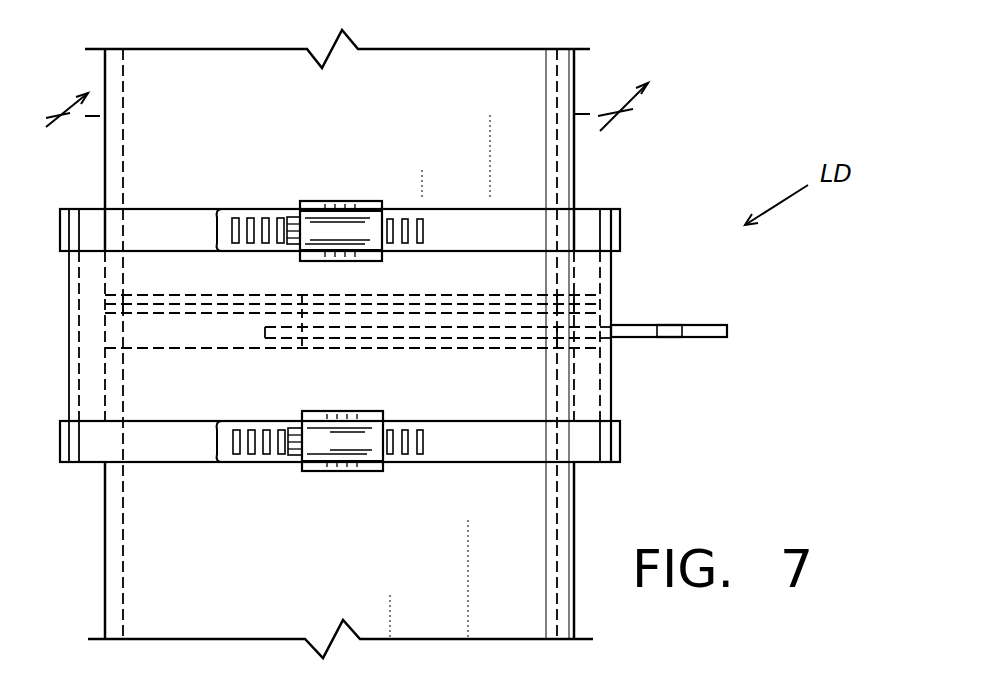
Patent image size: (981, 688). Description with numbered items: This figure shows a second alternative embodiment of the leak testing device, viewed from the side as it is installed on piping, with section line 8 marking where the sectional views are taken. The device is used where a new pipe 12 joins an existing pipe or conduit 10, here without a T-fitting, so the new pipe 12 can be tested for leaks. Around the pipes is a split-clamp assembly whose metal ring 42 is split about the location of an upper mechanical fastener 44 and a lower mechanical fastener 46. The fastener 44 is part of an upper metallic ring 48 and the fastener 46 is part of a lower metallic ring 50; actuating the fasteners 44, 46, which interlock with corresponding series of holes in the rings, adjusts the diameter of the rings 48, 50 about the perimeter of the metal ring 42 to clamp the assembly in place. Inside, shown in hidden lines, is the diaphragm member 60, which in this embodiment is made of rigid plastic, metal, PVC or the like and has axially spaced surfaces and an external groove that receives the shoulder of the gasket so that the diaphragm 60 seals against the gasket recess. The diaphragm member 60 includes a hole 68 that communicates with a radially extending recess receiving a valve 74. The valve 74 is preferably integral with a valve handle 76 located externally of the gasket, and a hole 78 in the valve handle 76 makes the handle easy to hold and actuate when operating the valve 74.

The section line 8- 8 is at (357, 106).
The existing pipe 10 is at (575, 530).
The new pipe 12 is at (574, 75).
The metal ring 42 is at (612, 293).
The upper mechanical fastener 44 is at (348, 200).
The lower mechanical fastener 46 is at (324, 471).
The upper metallic ring 48 is at (619, 215).
The lower metallic ring 50 is at (620, 445).
The diaphragm member 60 is at (187, 350).
The hole 68 is at (393, 282).
The valve 74 is at (372, 340).
The valve handle 76 is at (708, 325).
The hole 78 is at (668, 337).